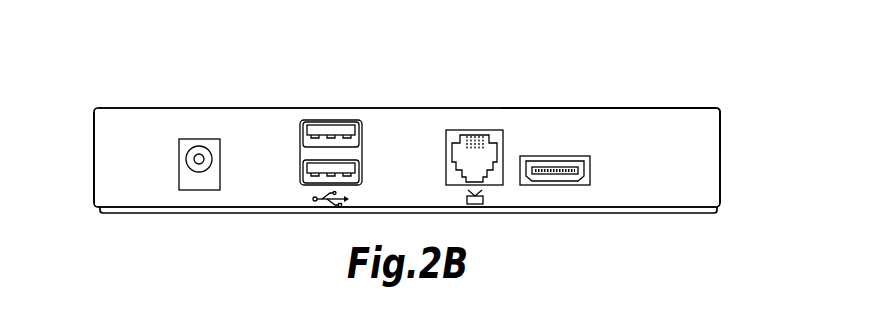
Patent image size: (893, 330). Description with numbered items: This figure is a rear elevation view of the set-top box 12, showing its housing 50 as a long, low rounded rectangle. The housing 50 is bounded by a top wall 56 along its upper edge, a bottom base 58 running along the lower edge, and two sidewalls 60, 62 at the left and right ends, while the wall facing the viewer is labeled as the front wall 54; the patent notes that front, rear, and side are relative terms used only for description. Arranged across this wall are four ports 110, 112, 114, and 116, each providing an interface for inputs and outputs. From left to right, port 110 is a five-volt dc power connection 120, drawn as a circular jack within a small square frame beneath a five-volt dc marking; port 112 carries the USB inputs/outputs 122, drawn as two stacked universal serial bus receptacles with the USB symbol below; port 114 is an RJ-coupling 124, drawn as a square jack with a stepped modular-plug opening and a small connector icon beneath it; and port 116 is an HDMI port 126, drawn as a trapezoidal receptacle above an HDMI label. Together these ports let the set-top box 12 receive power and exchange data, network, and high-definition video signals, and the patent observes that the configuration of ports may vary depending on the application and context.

The set-top box 12 is at (120, 97).
The housing 50 is at (692, 97).
The front wall 54 is at (128, 198).
The top wall 56 is at (165, 108).
The bottom base 58 is at (255, 213).
The sidewall 60 is at (94, 159).
The sidewall 62 is at (720, 157).
The port 110 is at (211, 143).
The port 112 is at (330, 118).
The port 114 is at (477, 130).
The port 116 is at (553, 156).
The 5V dc power connection 120 is at (197, 186).
The USB inputs/outputs 122 is at (310, 187).
The RJ-coupling 124 is at (493, 178).
The HDMI port 126 is at (580, 196).